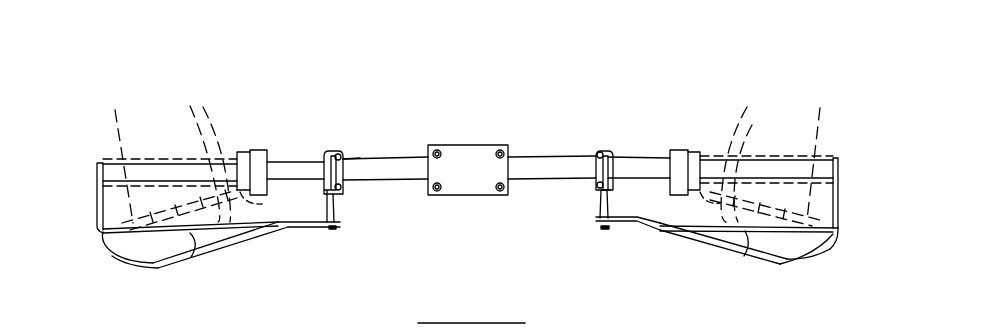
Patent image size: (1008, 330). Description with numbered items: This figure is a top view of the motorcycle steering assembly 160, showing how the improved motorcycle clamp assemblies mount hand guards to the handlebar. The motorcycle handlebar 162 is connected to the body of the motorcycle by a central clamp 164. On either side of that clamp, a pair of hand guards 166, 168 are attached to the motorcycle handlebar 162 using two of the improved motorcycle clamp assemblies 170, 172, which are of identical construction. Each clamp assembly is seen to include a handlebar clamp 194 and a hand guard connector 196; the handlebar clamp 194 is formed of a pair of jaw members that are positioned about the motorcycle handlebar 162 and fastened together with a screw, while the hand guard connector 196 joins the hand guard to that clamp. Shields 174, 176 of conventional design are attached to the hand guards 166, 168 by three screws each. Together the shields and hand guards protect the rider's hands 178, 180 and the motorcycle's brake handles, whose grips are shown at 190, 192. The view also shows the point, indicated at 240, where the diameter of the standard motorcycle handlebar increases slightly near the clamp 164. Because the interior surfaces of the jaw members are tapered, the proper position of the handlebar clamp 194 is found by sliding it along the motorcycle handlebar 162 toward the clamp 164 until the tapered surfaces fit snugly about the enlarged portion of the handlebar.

The motorcycle steering assembly 160 is at (652, 32).
The motorcycle handlebar 162 is at (542, 163).
The clamp 164 is at (455, 144).
The hand guard 166 is at (303, 232).
The hand guard 168 is at (637, 232).
The motorcycle clamp assembly 170 is at (336, 148).
The motorcycle clamp assembly 172 is at (607, 148).
The shield 174 is at (187, 268).
The shield 176 is at (780, 268).
The rider's hand 178 is at (194, 111).
The rider's hand 180 is at (746, 108).
The grip 190 is at (258, 148).
The grip 192 is at (682, 150).
The handlebar clamp 194 is at (347, 196).
The hand guard connector 196 is at (345, 231).
The handlebar diameter increase 240 is at (368, 156).